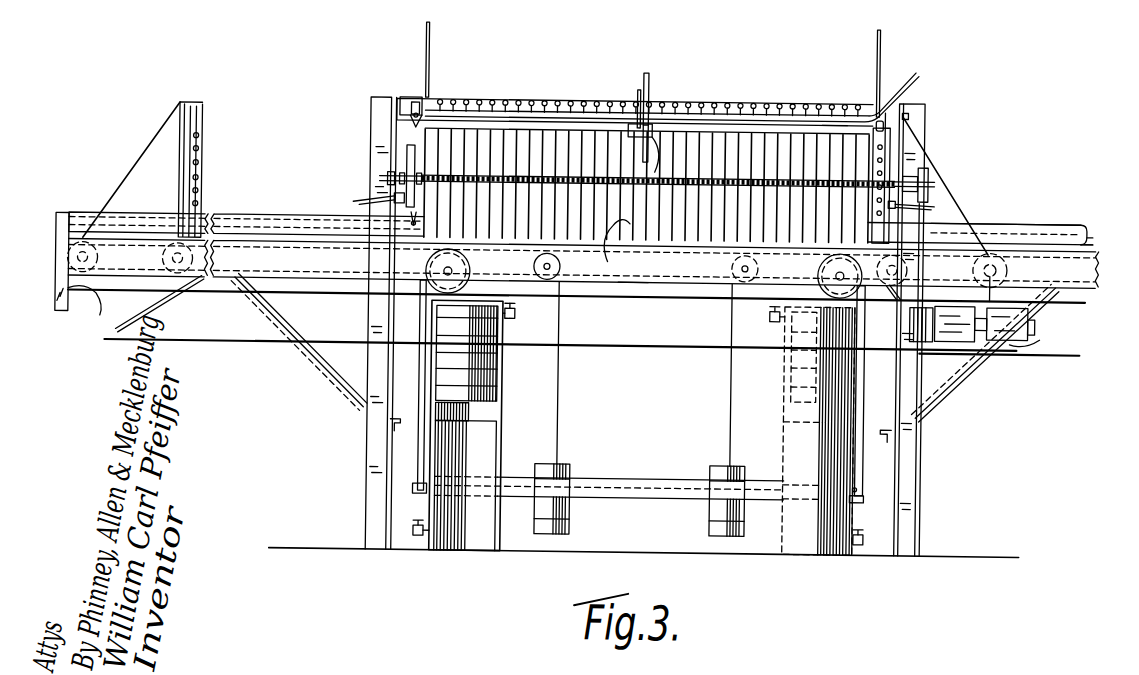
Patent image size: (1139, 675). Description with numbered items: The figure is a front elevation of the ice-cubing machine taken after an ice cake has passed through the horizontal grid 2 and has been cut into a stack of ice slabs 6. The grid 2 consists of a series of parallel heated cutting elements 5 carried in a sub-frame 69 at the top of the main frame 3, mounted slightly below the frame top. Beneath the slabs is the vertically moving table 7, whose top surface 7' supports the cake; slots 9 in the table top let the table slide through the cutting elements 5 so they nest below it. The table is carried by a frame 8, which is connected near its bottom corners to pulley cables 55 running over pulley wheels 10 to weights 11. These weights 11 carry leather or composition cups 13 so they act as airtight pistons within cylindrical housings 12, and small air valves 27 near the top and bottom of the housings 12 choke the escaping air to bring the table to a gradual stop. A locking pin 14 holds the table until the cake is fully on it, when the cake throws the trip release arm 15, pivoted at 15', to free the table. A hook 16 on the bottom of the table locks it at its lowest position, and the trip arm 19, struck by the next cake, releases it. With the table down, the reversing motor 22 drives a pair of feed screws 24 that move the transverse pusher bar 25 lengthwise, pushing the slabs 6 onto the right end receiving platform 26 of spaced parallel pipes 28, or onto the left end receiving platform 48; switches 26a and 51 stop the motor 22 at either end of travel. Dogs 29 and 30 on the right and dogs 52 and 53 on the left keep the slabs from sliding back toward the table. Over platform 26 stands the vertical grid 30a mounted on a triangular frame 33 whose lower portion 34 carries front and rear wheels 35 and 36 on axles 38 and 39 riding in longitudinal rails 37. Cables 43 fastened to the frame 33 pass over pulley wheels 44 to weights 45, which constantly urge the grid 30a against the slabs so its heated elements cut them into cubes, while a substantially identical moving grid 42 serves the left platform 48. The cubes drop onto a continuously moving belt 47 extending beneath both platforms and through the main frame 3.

The horizontal grid 2 is at (698, 102).
The main frame 3 is at (368, 122).
The heated cutting elements 5 is at (478, 102).
The ice slabs 6 is at (829, 124).
The vertically moving table 7 is at (646, 202).
The table top 7' is at (617, 245).
The frame 8 is at (420, 461).
The slots 9 is at (452, 228).
The pulley wheels 10 is at (470, 271).
The weights 11 is at (486, 416).
The cylindrical housing 12 is at (500, 453).
The leather or composition cups 13 is at (496, 397).
The locking pin 14 is at (633, 287).
The trip release arm 15 is at (667, 107).
The pivot of trip release arm 15' is at (669, 102).
The hook 16 is at (626, 130).
The trip arm 19 is at (636, 90).
The reversing electric motor 22 is at (1032, 325).
The feed screws 24 is at (655, 142).
The pusher bar 25 is at (405, 160).
The right end receiving platform 26 is at (1062, 229).
The switch 26a is at (922, 204).
The air valves 27 is at (517, 316).
The pipes 28 is at (1090, 239).
The dog 29 is at (428, 38).
The dog 30 is at (862, 228).
The vertical grid 30a is at (889, 144).
The triangular frame 33 is at (142, 162).
The lower portion of frame 34 is at (911, 270).
The front wheel 35 is at (892, 297).
The rear wheel 36 is at (100, 287).
The longitudinal rails 37 is at (1068, 282).
The axle 38 is at (576, 288).
The axle 39 is at (983, 283).
The moving grid 42 is at (200, 130).
The cables 43 is at (232, 284).
The pulley wheels 44 is at (560, 268).
The weights 45 is at (572, 472).
The continuously moving belt 47 is at (706, 296).
The left end receiving platform 48 is at (84, 220).
The switch 51 is at (372, 201).
The dog 52 is at (410, 100).
The dog 53 is at (408, 222).
The pulley cables 55 is at (470, 297).
The sub-frame 69 is at (772, 113).